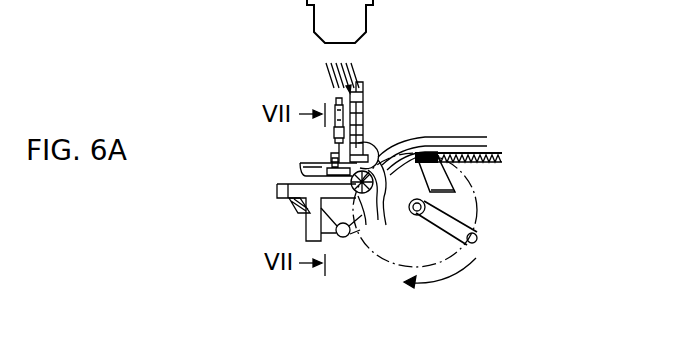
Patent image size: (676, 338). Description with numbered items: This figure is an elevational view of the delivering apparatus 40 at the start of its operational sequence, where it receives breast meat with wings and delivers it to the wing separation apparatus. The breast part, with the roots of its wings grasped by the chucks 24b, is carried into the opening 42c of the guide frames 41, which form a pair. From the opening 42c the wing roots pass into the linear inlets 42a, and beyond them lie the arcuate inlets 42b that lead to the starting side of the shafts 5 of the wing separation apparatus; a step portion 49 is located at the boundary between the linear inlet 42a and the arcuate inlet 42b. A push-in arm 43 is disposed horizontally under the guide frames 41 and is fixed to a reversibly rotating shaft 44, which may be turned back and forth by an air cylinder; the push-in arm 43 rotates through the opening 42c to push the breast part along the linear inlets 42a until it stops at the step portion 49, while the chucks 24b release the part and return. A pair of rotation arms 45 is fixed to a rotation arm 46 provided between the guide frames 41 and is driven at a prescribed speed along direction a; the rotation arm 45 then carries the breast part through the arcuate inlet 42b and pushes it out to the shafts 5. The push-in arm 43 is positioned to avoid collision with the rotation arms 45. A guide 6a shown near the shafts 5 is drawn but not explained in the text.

The delivering apparatus 40 is at (280, 92).
The chucks 24b is at (366, 92).
The arcuate inlets 42b is at (394, 140).
The guide band 6a is at (453, 148).
The shafts 5 is at (494, 156).
The linear inlets 42a is at (313, 166).
The opening 42c is at (302, 178).
The guide frames 41 is at (280, 188).
The push-in arm 43 is at (296, 208).
The reversibly rotating shaft 44 is at (345, 240).
The step portion 49 is at (389, 205).
The rotation arm 46 is at (428, 203).
The rotation arms 45 is at (477, 242).
The rotation direction a is at (464, 270).